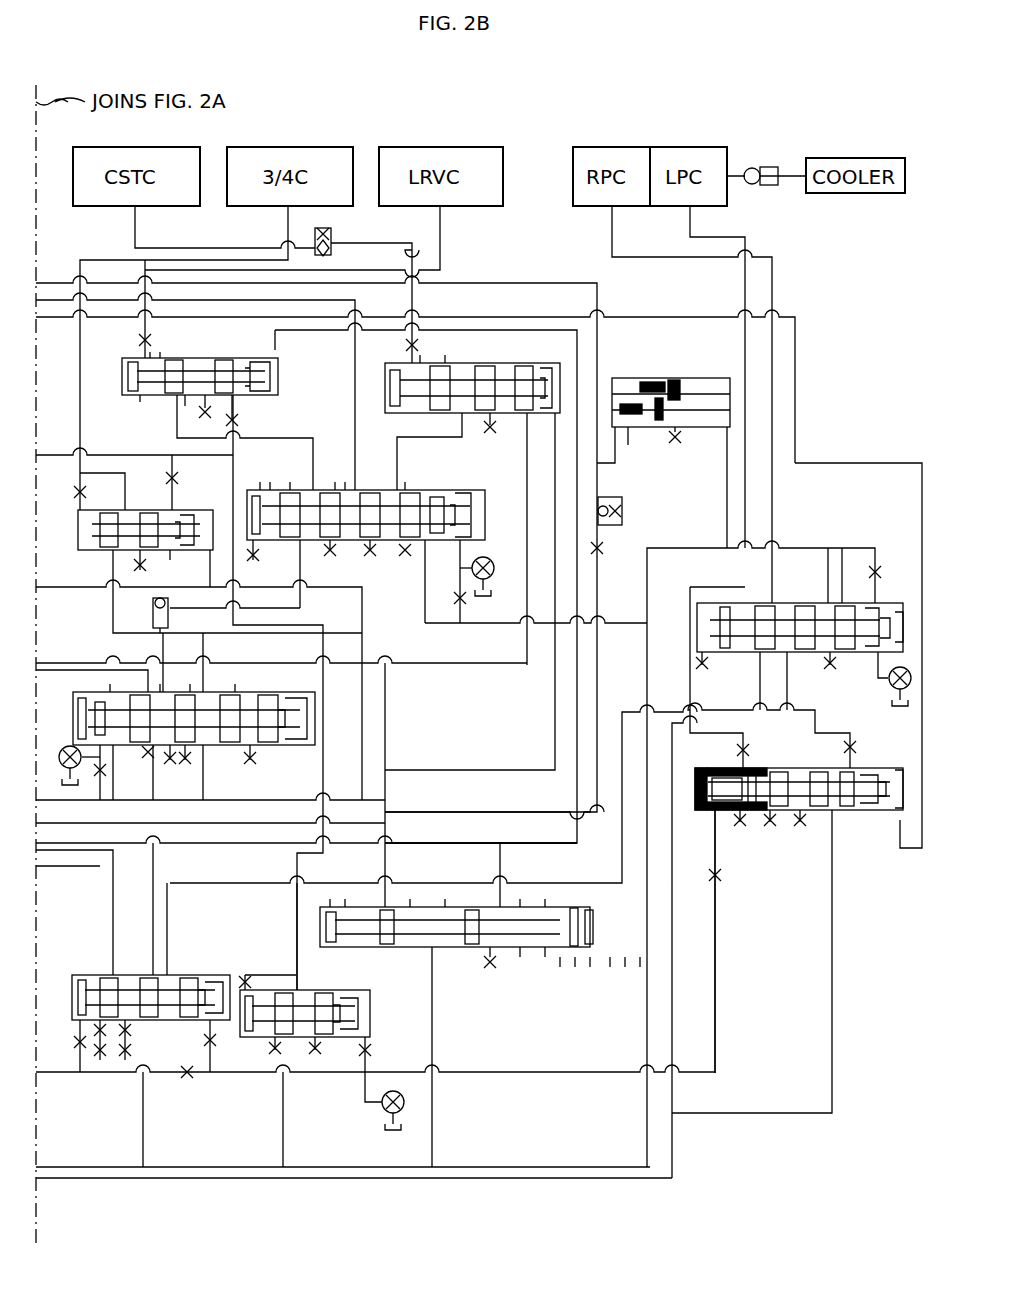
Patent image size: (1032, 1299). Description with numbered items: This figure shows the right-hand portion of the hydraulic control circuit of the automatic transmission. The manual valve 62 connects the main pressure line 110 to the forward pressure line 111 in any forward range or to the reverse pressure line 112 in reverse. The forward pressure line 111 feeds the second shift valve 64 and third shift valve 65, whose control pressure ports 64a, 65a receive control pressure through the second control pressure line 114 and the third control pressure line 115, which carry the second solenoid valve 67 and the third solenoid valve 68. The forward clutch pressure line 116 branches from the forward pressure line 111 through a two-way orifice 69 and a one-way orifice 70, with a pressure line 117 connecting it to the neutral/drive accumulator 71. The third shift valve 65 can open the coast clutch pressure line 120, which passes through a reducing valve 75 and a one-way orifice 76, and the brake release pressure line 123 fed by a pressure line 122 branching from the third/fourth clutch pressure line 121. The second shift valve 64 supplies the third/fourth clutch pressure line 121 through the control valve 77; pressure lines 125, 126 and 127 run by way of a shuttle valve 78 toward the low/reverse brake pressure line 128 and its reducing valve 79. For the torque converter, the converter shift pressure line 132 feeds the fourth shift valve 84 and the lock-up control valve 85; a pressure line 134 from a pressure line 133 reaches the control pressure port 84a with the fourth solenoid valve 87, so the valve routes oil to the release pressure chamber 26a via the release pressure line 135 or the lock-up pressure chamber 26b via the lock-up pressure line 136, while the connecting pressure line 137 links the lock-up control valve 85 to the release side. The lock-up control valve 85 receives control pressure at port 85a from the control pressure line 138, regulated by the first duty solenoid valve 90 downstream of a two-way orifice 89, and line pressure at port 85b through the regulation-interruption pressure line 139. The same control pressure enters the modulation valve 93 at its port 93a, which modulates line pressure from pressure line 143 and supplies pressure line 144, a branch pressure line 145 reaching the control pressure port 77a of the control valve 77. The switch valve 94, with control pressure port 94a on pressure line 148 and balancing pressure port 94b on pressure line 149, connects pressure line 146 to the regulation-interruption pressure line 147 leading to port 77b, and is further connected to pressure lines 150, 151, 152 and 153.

The release pressure chamber 26a is at (590, 218).
The lock-up pressure chamber 26b is at (730, 210).
The manual valve 62 is at (486, 963).
The second shift valve 64 is at (266, 696).
The control pressure port 64a is at (102, 692).
The third shift valve 65 is at (288, 492).
The control pressure port 65a is at (470, 536).
The second solenoid valve 67 is at (66, 744).
The third solenoid valve 68 is at (490, 579).
The two-way orifice 69 is at (603, 548).
The one-way orifice 70 is at (622, 503).
The neutral/drive accumulator 71 is at (675, 372).
The reducing valve 75 is at (508, 358).
The one-way orifice 76 is at (340, 236).
The control valve 77 is at (77, 546).
The control pressure port 77a is at (170, 509).
The regulation-interruption pressure port 77b is at (206, 558).
The shuttle valve 78 is at (168, 600).
The reducing valve 79 is at (124, 398).
The fourth shift valve 84 is at (808, 600).
The control pressure port 84a is at (897, 574).
The lock-up control valve 85 is at (888, 852).
The control pressure port 85a is at (708, 822).
The regulation-interruption pressure port 85b is at (887, 812).
The fourth solenoid valve 87 is at (890, 700).
The two-way orifice 89 is at (187, 1080).
The first duty solenoid valve 90 is at (374, 1115).
The modulation valve 93 is at (336, 988).
The control pressure port 93a is at (370, 1018).
The switch valve 94 is at (73, 936).
The control pressure port 94a is at (214, 970).
The balancing pressure port 94b is at (78, 974).
The main pressure line 110 is at (483, 1158).
The forward pressure line 111 is at (381, 865).
The reverse pressure line 112 is at (510, 846).
The second control pressure line 114 is at (98, 796).
The third control pressure line 115 is at (462, 626).
The forward clutch pressure line 116 is at (485, 811).
The pressure line 117 is at (615, 460).
The coast clutch pressure line 120 is at (132, 228).
The 3/4 clutch pressure line 121 is at (288, 228).
The pressure line 122 is at (222, 640).
The brake release pressure line 123 is at (357, 379).
The pressure line 125 is at (82, 660).
The pressure line 126 is at (183, 662).
The pressure line 127 is at (296, 571).
The low/reverse brake pressure line 128 is at (440, 236).
The converter shift pressure line 132 is at (756, 686).
The pressure line 133 is at (650, 571).
The pressure line 134 is at (875, 550).
The release pressure line 135 is at (772, 283).
The lock-up pressure line 136 is at (748, 283).
The connecting pressure line 137 is at (815, 737).
The control pressure line 138 is at (716, 914).
The regulation-interruption pressure line 139 is at (847, 464).
The pressure line 143 is at (283, 1102).
The pressure line 144 is at (150, 456).
The pressure line 145 is at (174, 490).
The pressure line 146 is at (144, 1130).
The regulation-interruption pressure line 147 is at (385, 706).
The pressure line 148 is at (216, 1052).
The pressure line 149 is at (80, 1078).
The pressure line 150 is at (815, 678).
The pressure line 151 is at (828, 552).
The pressure line 152 is at (112, 880).
The pressure line 153 is at (173, 801).